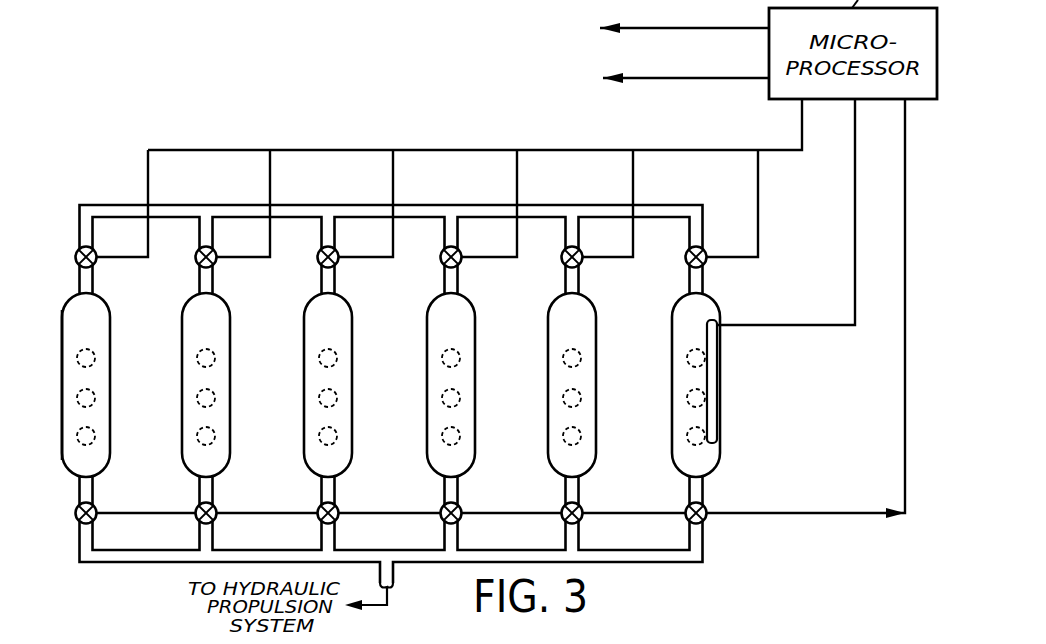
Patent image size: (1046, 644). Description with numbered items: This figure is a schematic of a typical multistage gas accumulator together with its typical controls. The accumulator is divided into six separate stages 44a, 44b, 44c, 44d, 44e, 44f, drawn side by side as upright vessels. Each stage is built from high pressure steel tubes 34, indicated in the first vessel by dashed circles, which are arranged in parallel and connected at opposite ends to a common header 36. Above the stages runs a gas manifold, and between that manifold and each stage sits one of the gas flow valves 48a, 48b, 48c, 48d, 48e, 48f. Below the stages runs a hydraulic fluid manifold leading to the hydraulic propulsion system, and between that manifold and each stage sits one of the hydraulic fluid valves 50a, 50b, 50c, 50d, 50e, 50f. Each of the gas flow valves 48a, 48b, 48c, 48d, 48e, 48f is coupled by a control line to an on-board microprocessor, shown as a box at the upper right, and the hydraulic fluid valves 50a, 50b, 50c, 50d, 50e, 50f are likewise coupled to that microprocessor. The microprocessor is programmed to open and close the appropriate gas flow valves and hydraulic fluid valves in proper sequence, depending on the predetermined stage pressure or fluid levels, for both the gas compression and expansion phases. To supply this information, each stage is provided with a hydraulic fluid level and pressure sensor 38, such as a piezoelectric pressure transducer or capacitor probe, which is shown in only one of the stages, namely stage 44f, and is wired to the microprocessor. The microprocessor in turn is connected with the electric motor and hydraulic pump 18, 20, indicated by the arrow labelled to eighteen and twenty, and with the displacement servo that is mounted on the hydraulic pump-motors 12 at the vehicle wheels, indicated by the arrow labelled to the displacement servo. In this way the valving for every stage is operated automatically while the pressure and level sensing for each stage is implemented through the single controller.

The hydraulic pump-motors 12 is at (589, 25).
The electric motor 18 is at (622, 81).
The hydraulic pump 20 is at (613, 78).
The high pressure steel tubes 34 is at (77, 430).
The common header 36 is at (60, 322).
The hydraulic fluid level and pressure sensor 38 is at (724, 387).
The accumulator stage 44a is at (124, 336).
The accumulator stage 44b is at (242, 337).
The accumulator stage 44c is at (353, 345).
The accumulator stage 44d is at (489, 340).
The accumulator stage 44e is at (597, 347).
The accumulator stage 44f is at (721, 351).
The gas flow valve 48a is at (75, 258).
The gas flow valve 48b is at (196, 263).
The gas flow valve 48c is at (318, 263).
The gas flow valve 48d is at (441, 263).
The gas flow valve 48e is at (562, 263).
The gas flow valve 48f is at (686, 262).
The hydraulic fluid valve 50a is at (75, 516).
The hydraulic fluid valve 50b is at (196, 519).
The hydraulic fluid valve 50c is at (318, 519).
The hydraulic fluid valve 50d is at (441, 519).
The hydraulic fluid valve 50e is at (562, 519).
The hydraulic fluid valve 50f is at (686, 519).